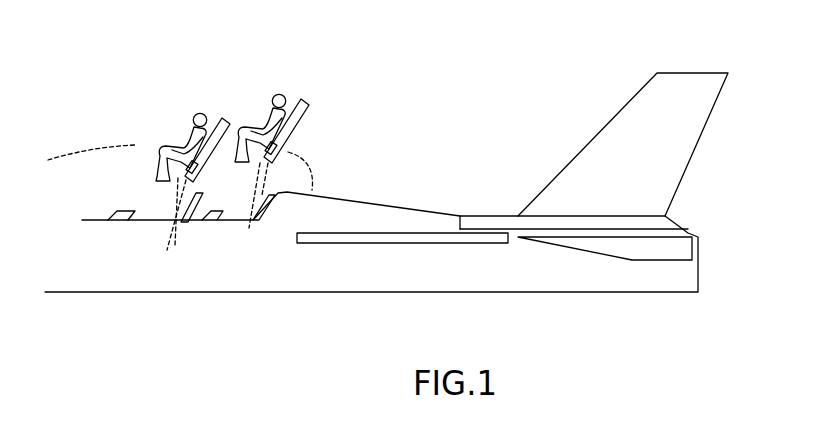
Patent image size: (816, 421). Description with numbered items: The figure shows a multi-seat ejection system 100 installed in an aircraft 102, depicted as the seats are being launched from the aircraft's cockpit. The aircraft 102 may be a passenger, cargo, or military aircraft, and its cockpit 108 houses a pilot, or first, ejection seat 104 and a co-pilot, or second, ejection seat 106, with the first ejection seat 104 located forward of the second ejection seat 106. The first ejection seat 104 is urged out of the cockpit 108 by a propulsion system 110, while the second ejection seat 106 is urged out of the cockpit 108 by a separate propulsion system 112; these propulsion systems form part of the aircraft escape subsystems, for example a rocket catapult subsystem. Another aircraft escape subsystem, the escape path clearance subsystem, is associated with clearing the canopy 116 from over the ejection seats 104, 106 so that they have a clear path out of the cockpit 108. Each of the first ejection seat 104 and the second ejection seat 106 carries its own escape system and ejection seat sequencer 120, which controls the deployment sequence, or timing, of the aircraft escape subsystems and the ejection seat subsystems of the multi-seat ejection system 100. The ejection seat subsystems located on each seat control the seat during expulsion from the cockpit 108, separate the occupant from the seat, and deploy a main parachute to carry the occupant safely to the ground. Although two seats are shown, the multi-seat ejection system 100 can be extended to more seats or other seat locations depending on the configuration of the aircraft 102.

The multi-seat ejection system 100 is at (377, 78).
The aircraft 102 is at (438, 274).
The first ejection seat 104 is at (222, 122).
The second ejection seat 106 is at (298, 110).
The cockpit 108 is at (78, 177).
The propulsion system 110 is at (178, 203).
The propulsion system 112 is at (250, 197).
The canopy 116 is at (114, 144).
The escape system and ejection seat (ESES) sequencer 120 is at (198, 172).